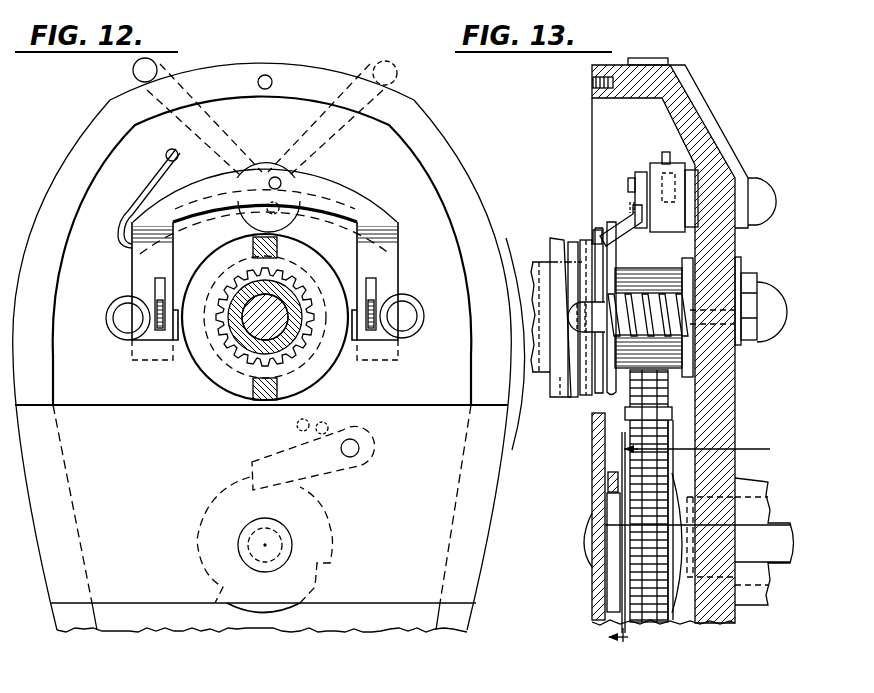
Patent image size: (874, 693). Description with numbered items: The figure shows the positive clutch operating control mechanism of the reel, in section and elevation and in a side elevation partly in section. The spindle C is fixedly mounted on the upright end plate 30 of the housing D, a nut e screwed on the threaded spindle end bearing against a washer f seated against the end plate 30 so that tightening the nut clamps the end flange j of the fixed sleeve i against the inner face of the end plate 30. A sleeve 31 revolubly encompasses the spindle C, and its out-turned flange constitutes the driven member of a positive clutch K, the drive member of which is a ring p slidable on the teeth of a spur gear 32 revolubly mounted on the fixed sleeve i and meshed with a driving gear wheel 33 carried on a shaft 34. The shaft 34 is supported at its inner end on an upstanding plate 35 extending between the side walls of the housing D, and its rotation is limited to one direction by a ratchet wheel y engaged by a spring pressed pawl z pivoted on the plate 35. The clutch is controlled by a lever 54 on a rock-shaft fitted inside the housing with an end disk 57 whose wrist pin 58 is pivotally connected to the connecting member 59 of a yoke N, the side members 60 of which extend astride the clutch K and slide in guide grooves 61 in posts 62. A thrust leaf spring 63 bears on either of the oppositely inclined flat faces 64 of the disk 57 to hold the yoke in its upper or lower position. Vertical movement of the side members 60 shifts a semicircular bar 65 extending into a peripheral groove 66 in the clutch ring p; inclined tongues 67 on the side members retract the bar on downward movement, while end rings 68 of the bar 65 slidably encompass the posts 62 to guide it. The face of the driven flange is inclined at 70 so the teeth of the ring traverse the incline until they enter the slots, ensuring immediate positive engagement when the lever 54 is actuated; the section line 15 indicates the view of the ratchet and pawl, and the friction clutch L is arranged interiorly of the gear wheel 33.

In FIG. 12, the housing D is at (72, 150).
In FIG. 13, the housing D is at (590, 70).
In FIG. 12, the lever 54 is at (133, 78).
In FIG. 13, the lever 54 is at (703, 94).
In FIG. 12, the inclined flat face 64 is at (265, 119).
In FIG. 12, the yoke N is at (400, 224).
In FIG. 12, the connecting member 59 is at (352, 200).
In FIG. 13, the connecting member 59 is at (622, 226).
In FIG. 12, the side member 60 is at (132, 266).
In FIG. 12, the inclined tongue 67 is at (152, 330).
In FIG. 12, the post 62 is at (107, 320).
In FIG. 12, the guide groove 61 is at (116, 308).
In FIG. 12, the ring 68 is at (115, 337).
In FIG. 12, the spindle C is at (289, 348).
In FIG. 12, the ring p is at (223, 375).
In FIG. 13, the ring p is at (617, 252).
In FIG. 12, the spur gear 32 is at (300, 348).
In FIG. 13, the spur gear 32 is at (644, 282).
In FIG. 12, the fixed sleeve i is at (238, 344).
In FIG. 12, the semicircular bar 65 is at (213, 251).
In FIG. 12, the end disk 57 is at (266, 160).
In FIG. 13, the end disk 57 is at (686, 166).
In FIG. 12, the wrist pin 58 is at (282, 181).
In FIG. 13, the wrist pin 58 is at (634, 176).
In FIG. 12, the thrust leaf spring 63 is at (160, 162).
In FIG. 13, the thrust leaf spring 63 is at (666, 152).
In FIG. 12, the positive clutch K is at (185, 372).
In FIG. 12, the pawl z is at (293, 453).
In FIG. 13, the pawl z is at (607, 480).
In FIG. 12, the ratchet wheel y is at (318, 498).
In FIG. 13, the ratchet wheel y is at (607, 597).
In FIG. 12, the shaft 34 is at (285, 537).
In FIG. 13, the shaft 34 is at (600, 545).
In FIG. 12, the upstanding plate 35 is at (492, 535).
In FIG. 13, the upstanding plate 35 is at (607, 505).
In FIG. 13, the sleeve 31 is at (537, 275).
In FIG. 13, the incline 70 is at (565, 397).
In FIG. 13, the peripheral groove 66 is at (598, 396).
In FIG. 13, the nut e is at (766, 292).
In FIG. 13, the washer f is at (746, 272).
In FIG. 13, the end flange j is at (690, 265).
In FIG. 13, the driving gear wheel 33 is at (655, 625).
In FIG. 13, the disc I is at (682, 622).
In FIG. 13, the end plate 30 is at (737, 622).
In FIG. 13, the section line 15 is at (695, 555).